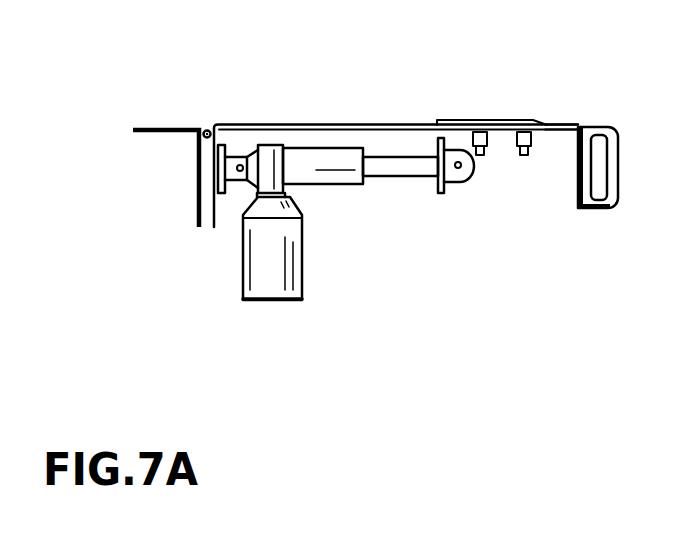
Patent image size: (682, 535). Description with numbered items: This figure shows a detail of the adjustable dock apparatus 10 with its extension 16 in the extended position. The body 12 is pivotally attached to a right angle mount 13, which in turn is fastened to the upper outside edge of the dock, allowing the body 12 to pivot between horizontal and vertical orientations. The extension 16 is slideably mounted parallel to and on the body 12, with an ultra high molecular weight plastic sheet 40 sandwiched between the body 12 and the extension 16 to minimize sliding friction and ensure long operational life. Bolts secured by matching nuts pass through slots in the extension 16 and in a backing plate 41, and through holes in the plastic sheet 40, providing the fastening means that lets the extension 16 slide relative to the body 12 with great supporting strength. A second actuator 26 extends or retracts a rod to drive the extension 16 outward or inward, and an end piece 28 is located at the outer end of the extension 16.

The adjustable dock apparatus 10 is at (306, 103).
The body 12 is at (383, 127).
The right angle mount 13 is at (168, 128).
The extension 16 is at (565, 127).
The second actuator 26 is at (290, 222).
The end bracket 28 is at (618, 148).
The plastic sheet 40 is at (456, 127).
The backing plate 41 is at (560, 137).